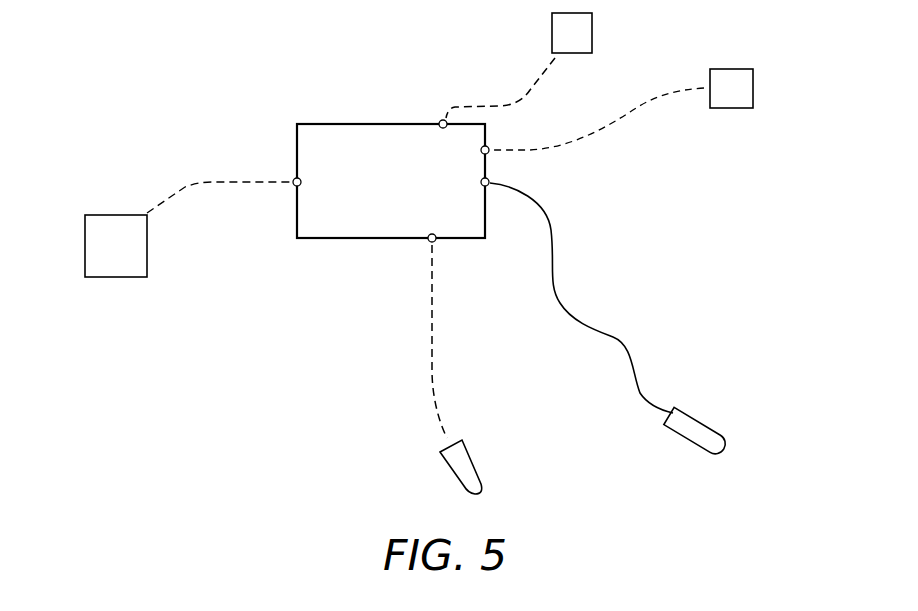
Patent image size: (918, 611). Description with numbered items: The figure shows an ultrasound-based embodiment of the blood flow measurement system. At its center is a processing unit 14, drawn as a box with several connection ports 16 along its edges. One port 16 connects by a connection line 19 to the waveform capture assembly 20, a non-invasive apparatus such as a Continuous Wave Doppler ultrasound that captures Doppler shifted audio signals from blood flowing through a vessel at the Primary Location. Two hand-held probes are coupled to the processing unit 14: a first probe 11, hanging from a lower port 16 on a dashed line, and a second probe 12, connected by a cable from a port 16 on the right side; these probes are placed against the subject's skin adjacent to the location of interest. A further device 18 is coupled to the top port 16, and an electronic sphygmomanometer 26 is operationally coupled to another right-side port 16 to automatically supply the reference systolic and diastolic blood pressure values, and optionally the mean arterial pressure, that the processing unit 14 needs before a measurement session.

The first measuring probe 11 is at (478, 462).
The second measuring probe 12 is at (703, 421).
The processing unit 14 is at (297, 238).
The connection port 16 is at (295, 179).
The display device 18 is at (552, 23).
The connection line 19 is at (190, 184).
The waveform capture assembly 20 is at (85, 255).
The electronic sphygmomanometer 26 is at (753, 69).